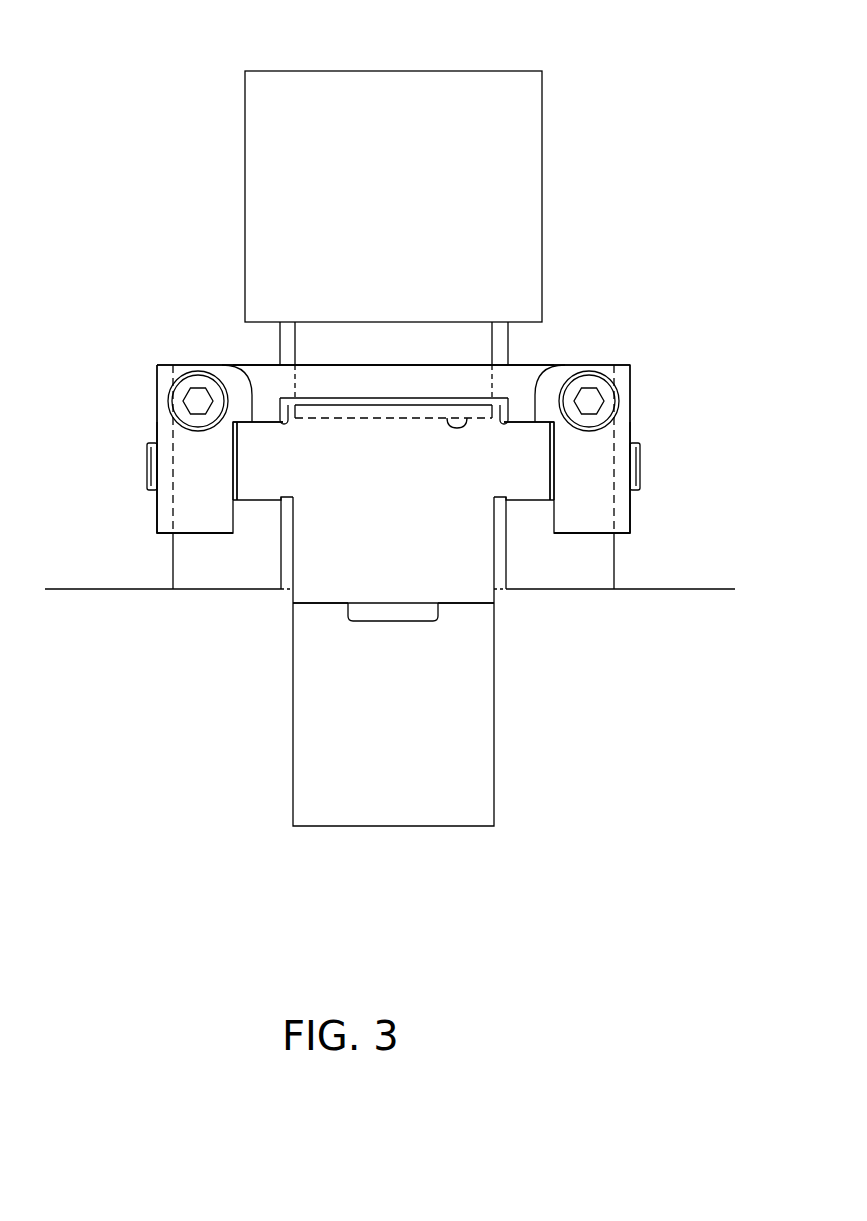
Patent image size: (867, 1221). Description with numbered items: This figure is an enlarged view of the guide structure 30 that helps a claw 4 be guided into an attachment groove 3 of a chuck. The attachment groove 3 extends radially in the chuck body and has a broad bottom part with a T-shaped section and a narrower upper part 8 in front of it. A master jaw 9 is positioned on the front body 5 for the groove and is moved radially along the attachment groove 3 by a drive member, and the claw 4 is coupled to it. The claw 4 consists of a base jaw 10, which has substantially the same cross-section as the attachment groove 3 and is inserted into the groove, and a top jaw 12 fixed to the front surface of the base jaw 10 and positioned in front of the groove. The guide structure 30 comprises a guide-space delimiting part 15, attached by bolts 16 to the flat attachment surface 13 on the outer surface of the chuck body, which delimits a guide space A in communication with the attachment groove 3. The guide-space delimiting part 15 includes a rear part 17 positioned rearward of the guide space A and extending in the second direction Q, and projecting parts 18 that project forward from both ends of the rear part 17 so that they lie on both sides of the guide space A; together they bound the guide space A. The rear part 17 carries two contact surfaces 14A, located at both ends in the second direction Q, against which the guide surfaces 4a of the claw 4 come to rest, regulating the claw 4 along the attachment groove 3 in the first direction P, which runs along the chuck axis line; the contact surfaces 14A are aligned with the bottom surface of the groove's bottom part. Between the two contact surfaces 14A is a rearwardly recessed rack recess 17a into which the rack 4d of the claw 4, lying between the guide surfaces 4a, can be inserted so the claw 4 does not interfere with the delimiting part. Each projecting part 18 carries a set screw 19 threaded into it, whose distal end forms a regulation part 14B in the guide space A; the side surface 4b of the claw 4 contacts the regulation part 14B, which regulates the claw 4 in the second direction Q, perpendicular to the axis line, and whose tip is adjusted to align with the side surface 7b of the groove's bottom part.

The attachment groove 3 is at (503, 597).
The claw 4 is at (500, 828).
The guide surface 4a is at (248, 398).
The side surface 4b is at (233, 480).
The rack 4d is at (340, 412).
The front body 5 is at (699, 590).
The side surface 7b is at (237, 450).
The upper part 8 is at (284, 580).
The master jaw 9 is at (384, 71).
The base jaw 10 is at (316, 595).
The top jaw 12 is at (494, 713).
The attachment surface 13 is at (190, 590).
The contact surface 14A is at (262, 423).
The regulation part 14B is at (240, 467).
The guide-space delimiting part 15 is at (165, 362).
The bolt 16 is at (183, 400).
The rear part 17 is at (390, 398).
The rack recess 17a is at (457, 426).
The projecting part 18 is at (190, 535).
The set screw 19 is at (147, 462).
The guide structure 30 is at (125, 350).
The guide space A is at (347, 490).
The first direction P is at (124, 828).
The second direction Q is at (270, 983).